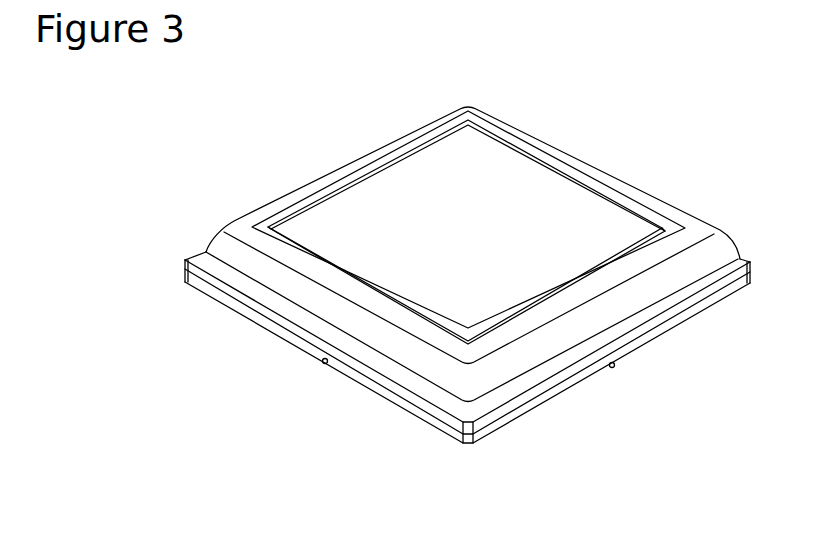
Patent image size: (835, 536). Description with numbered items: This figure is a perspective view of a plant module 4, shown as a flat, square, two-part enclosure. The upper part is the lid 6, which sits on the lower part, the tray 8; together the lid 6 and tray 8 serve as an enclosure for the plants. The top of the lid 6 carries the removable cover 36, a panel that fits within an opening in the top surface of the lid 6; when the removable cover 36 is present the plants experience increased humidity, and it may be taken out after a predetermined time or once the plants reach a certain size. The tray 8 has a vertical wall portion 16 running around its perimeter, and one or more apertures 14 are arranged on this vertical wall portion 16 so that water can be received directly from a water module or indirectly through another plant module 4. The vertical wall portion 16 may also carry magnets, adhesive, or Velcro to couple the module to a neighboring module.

The plant module 4 is at (120, 165).
The lid 6 is at (235, 222).
The tray 8 is at (200, 291).
The apertures 14 is at (323, 363).
The vertical wall portion 16 is at (657, 333).
The removable cover 36 is at (348, 193).